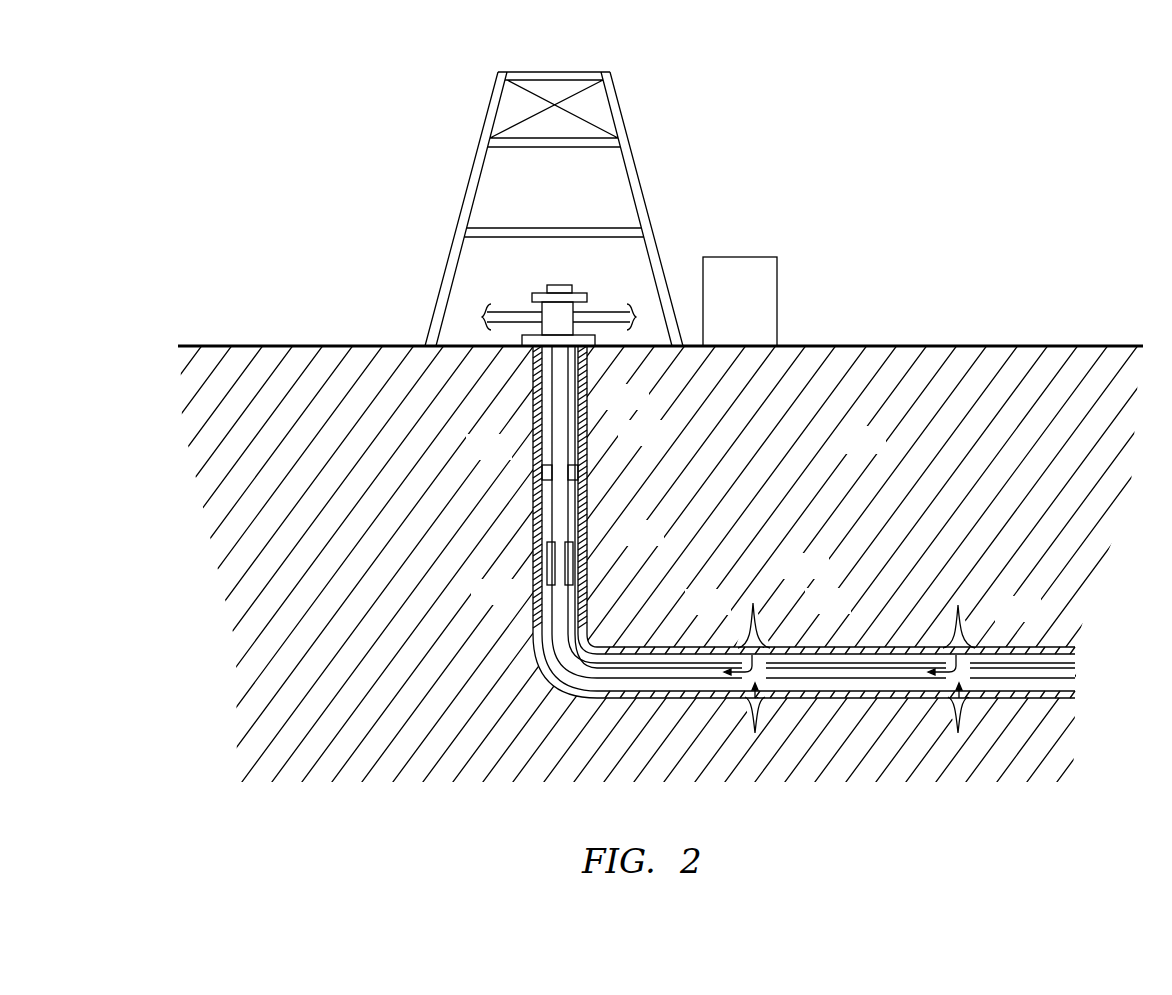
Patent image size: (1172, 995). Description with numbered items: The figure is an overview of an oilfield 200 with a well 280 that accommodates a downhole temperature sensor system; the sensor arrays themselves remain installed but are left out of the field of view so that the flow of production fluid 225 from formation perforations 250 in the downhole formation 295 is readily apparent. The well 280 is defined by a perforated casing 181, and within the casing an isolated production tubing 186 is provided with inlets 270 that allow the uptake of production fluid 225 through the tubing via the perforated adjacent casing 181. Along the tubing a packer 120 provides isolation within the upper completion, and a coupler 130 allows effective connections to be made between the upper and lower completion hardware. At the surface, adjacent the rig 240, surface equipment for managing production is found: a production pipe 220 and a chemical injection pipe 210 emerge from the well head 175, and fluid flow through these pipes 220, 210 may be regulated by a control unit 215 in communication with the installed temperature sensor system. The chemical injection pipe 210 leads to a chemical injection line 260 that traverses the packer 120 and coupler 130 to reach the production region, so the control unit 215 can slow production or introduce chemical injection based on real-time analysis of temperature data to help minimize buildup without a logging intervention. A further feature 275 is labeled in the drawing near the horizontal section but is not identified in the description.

The rig 240 is at (637, 170).
The well head 175 is at (570, 331).
The production pipe 220 is at (510, 318).
The chemical injection pipe 210 is at (610, 318).
The well 280 is at (545, 347).
The control unit 215 is at (724, 312).
The oilfield 200 is at (923, 345).
The downhole formation 295 is at (847, 452).
The packer 120 is at (538, 473).
The chemical injection line 260 is at (581, 420).
The production tubing 186 is at (548, 620).
The coupler 130 is at (573, 558).
The casing 181 is at (583, 458).
The formation perforations 250 is at (758, 620).
The fracture 275 is at (962, 635).
The inlets 270 is at (753, 700).
The production fluid 225 is at (742, 670).